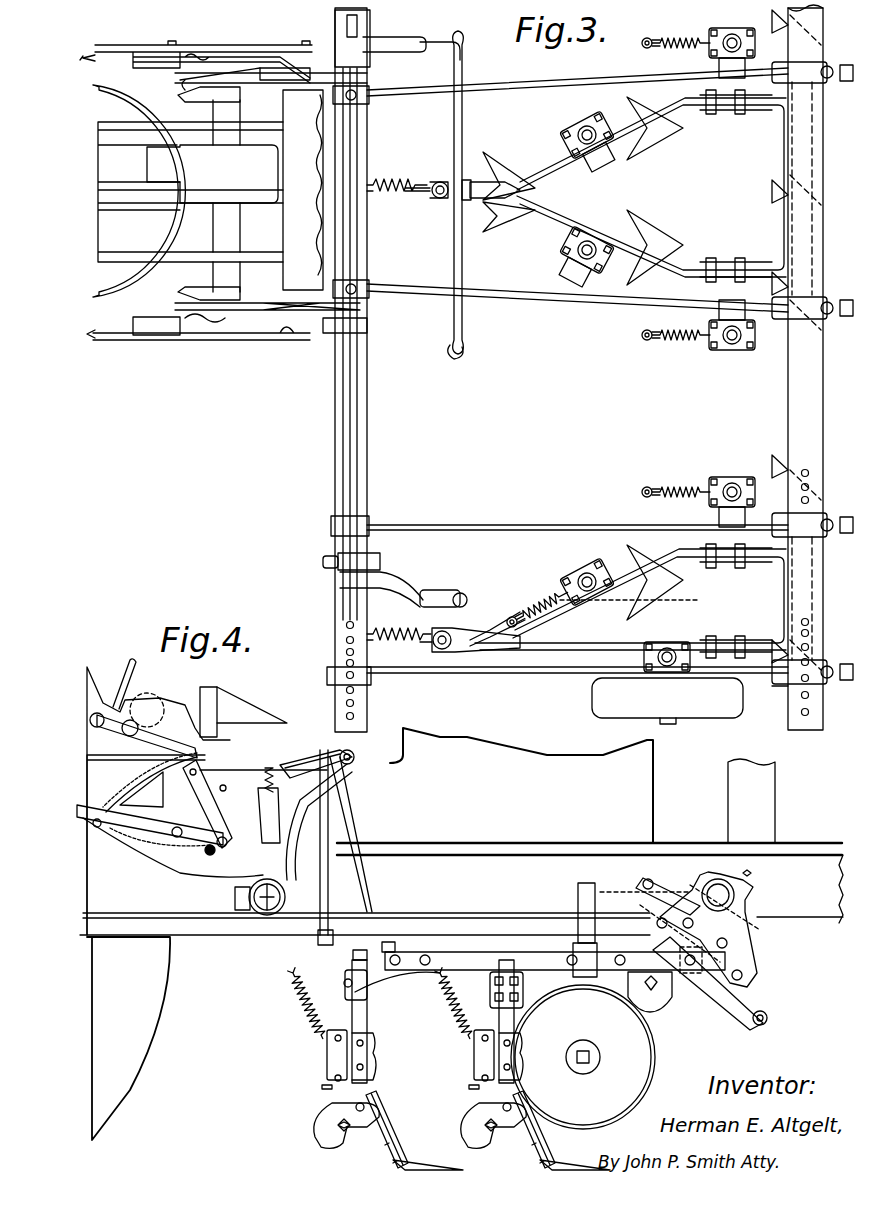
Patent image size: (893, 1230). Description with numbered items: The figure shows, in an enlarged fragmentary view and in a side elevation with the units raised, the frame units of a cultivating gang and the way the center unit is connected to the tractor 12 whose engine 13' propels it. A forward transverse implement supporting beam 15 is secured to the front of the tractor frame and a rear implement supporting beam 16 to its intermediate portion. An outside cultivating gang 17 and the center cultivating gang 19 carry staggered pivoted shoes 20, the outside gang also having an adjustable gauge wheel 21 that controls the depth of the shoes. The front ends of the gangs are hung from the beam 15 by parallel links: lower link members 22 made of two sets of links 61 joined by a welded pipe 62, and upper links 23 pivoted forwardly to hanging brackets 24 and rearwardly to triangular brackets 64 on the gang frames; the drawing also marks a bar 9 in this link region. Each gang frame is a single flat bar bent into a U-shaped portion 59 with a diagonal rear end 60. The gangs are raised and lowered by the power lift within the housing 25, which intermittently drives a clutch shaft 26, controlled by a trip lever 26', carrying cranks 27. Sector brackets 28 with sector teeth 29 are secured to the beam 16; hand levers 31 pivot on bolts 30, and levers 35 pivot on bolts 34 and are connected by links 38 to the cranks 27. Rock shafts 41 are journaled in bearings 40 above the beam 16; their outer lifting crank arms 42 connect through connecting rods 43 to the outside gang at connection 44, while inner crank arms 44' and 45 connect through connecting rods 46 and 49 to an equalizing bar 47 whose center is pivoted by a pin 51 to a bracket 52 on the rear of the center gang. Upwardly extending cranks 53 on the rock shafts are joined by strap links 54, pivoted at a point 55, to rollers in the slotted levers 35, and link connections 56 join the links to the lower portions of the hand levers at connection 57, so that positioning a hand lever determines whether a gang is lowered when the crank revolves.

In FIG. 4, the drawbar 9 is at (775, 1040).
In FIG. 4, the tractor 12 is at (233, 949).
In FIG. 4, the engine 13' is at (542, 785).
In FIG. 3, the forward implement supporting beam 15 is at (790, 412).
In FIG. 4, the forward implement supporting beam 15 is at (716, 879).
In FIG. 3, the rear implement supporting beam 16 is at (352, 243).
In FIG. 4, the rear implement supporting beam 16 is at (262, 915).
In FIG. 3, the outside cultivating gang 17 is at (577, 633).
In FIG. 4, the outside cultivating gang 17 is at (450, 952).
In FIG. 3, the center cultivating gang 19 is at (563, 176).
In FIG. 3, the pivoted shoes 20 is at (768, 40).
In FIG. 4, the pivoted shoes 20 is at (390, 1134).
In FIG. 3, the gauge wheel 21 is at (700, 715).
In FIG. 4, the gauge wheel 21 is at (628, 1062).
In FIG. 4, the lower parallel link member 22 is at (740, 995).
In FIG. 3, the upper parallel link 23 is at (748, 108).
In FIG. 4, the upper parallel link 23 is at (690, 895).
In FIG. 3, the hanging bracket 24 is at (823, 690).
In FIG. 4, the hanging bracket 24 is at (752, 928).
In FIG. 3, the power take-off housing 25 is at (264, 197).
In FIG. 4, the power take-off housing 25 is at (160, 702).
In FIG. 4, the clutch shaft 26 is at (150, 742).
In FIG. 4, the trip lever 26' is at (114, 671).
In FIG. 3, the crank 27 is at (192, 95).
In FIG. 4, the crank 27 is at (112, 745).
In FIG. 4, the sector bracket 28 is at (222, 868).
In FIG. 4, the sector teeth 29 is at (98, 842).
In FIG. 4, the bolt 30 is at (175, 838).
In FIG. 4, the hand lever 31 is at (98, 828).
In FIG. 4, the bolt 34 is at (205, 854).
In FIG. 4, the lever 35 is at (210, 786).
In FIG. 4, the link 38 is at (147, 710).
In FIG. 3, the bearing 40 is at (368, 325).
In FIG. 3, the rock shaft 41 is at (342, 22).
In FIG. 3, the lifting crank arm 42 is at (392, 578).
In FIG. 4, the lifting crank arm 42 is at (300, 805).
In FIG. 4, the connecting rod 43 is at (365, 815).
In FIG. 3, the connection to gang frame 44 is at (443, 603).
In FIG. 4, the connection to gang frame 44 is at (317, 751).
In FIG. 3, the lifting crank arm 44' is at (407, 274).
In FIG. 3, the lifting crank arm 45 is at (383, 42).
In FIG. 3, the connecting rod 46 is at (455, 352).
In FIG. 4, the connecting rod 46 is at (340, 800).
In FIG. 3, the equalizing bar 47 is at (463, 265).
In FIG. 3, the connecting rod 49 is at (460, 42).
In FIG. 3, the pin 51 is at (472, 180).
In FIG. 3, the bracket 52 is at (500, 185).
In FIG. 3, the upwardly extending crank 53 is at (368, 78).
In FIG. 4, the upwardly extending crank 53 is at (263, 800).
In FIG. 3, the link 54 is at (257, 84).
In FIG. 4, the link 54 is at (237, 775).
In FIG. 4, the pivot 55 is at (212, 763).
In FIG. 4, the link connection 56 is at (218, 820).
In FIG. 4, the connection to hand lever 57 is at (226, 846).
In FIG. 3, the U-shaped portion 59 is at (772, 616).
In FIG. 3, the diagonal rear end 60 is at (547, 617).
In FIG. 3, the lower link member 61 is at (830, 82).
In FIG. 3, the pipe 62 is at (814, 192).
In FIG. 3, the triangular bracket 64 is at (710, 118).
In FIG. 4, the triangular bracket 64 is at (638, 903).